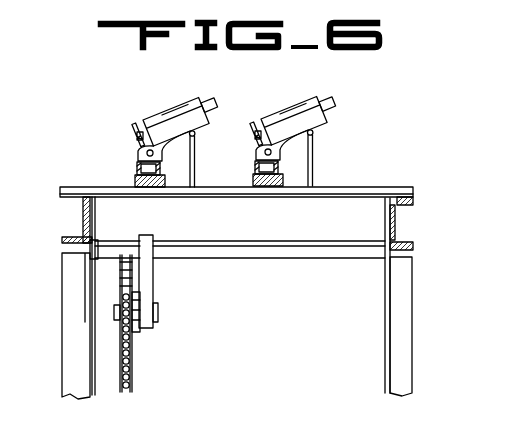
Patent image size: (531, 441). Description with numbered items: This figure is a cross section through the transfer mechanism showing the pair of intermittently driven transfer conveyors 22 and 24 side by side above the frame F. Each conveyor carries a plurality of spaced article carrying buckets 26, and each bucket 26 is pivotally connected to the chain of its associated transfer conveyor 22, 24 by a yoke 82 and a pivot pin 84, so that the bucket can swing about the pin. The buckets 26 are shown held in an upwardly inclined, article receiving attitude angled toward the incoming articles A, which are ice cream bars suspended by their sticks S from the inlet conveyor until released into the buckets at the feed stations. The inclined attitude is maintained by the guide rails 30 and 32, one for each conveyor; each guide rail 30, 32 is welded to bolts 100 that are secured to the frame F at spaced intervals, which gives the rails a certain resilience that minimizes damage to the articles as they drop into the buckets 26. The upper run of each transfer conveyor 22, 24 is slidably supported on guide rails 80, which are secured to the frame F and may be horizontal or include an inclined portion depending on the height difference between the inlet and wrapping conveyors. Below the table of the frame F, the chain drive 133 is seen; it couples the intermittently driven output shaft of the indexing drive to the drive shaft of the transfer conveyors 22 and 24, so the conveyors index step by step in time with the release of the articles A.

The articles A is at (157, 118).
The sticks S is at (334, 103).
The frame F is at (65, 330).
The transfer conveyor 22 is at (284, 165).
The transfer conveyor 24 is at (135, 163).
The article carrying bucket 26 is at (266, 117).
The guide rail 30 is at (315, 132).
The guide rail 32 is at (194, 137).
The guide rail 80 is at (262, 197).
The yoke 82 is at (138, 172).
The pivot pin 84 is at (145, 154).
The bolt 100 is at (194, 168).
The chain drive 133 is at (134, 360).